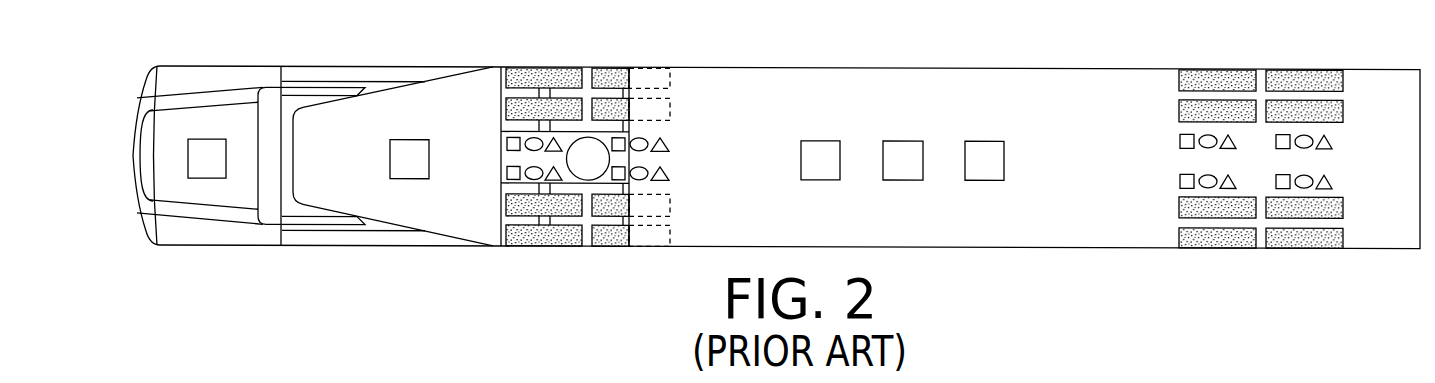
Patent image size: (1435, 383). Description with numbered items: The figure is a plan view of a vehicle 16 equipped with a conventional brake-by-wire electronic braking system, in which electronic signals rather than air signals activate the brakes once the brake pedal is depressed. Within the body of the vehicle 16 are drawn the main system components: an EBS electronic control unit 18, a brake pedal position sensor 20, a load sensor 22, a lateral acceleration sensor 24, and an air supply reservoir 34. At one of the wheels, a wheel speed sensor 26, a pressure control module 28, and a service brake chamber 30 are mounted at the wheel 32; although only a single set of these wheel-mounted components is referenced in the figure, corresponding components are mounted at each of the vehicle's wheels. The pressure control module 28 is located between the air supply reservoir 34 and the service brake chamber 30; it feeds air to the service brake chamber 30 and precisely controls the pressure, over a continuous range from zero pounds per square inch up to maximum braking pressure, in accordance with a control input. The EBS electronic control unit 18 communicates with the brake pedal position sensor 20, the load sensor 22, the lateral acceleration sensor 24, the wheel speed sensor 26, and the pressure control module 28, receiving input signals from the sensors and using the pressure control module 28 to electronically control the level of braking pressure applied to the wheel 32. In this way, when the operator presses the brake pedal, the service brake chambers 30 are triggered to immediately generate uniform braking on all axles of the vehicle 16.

The vehicle 16 is at (972, 66).
The EBS electronic control unit 18 is at (409, 159).
The brake pedal position sensor 20 is at (207, 158).
The load sensor 22 is at (903, 160).
The lateral acceleration sensor 24 is at (984, 160).
The wheel speed sensor 26 is at (1226, 146).
The pressure control module 28 is at (1179, 137).
The service brake chamber 30 is at (1205, 145).
The wheel 32 is at (1179, 105).
The air supply reservoir 34 is at (820, 160).